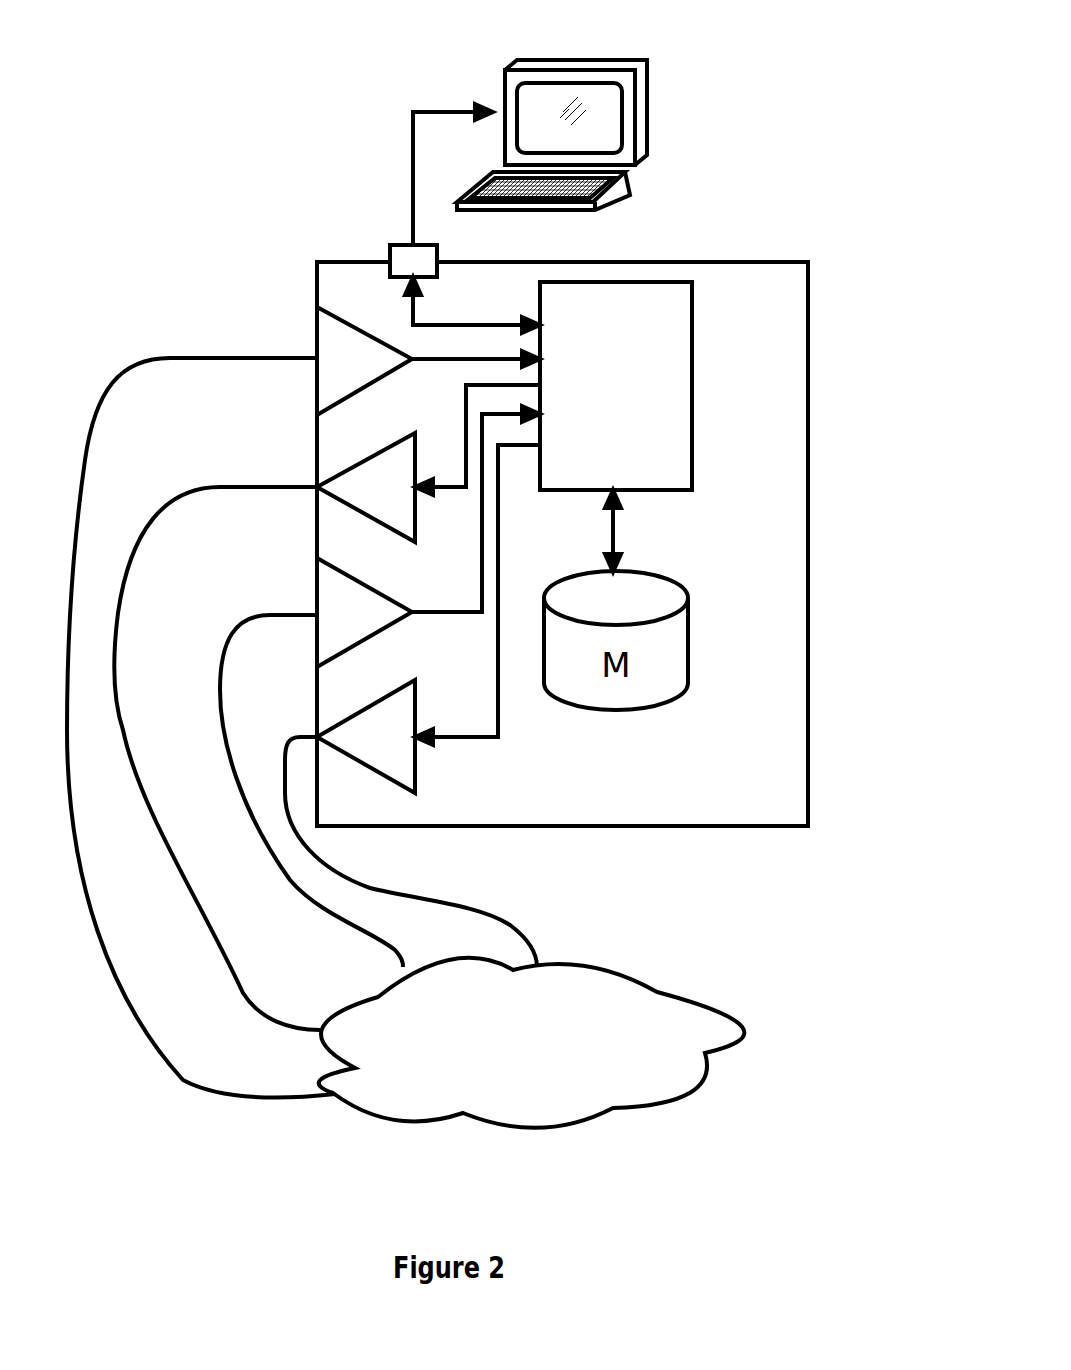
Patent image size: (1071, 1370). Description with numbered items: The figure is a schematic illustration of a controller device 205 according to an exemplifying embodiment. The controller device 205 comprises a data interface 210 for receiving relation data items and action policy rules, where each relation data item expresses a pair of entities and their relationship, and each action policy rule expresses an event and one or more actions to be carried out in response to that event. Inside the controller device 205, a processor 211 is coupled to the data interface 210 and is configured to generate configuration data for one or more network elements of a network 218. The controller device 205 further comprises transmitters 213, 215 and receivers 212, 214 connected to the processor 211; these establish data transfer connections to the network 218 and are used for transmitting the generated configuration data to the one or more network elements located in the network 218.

The controller device 205 is at (723, 262).
The data interface 210 is at (393, 245).
The processor 211 is at (587, 403).
The receiver 212 is at (330, 373).
The transmitter 213 is at (357, 500).
The receiver 214 is at (326, 628).
The transmitter 215 is at (359, 748).
The network 218 is at (490, 1062).